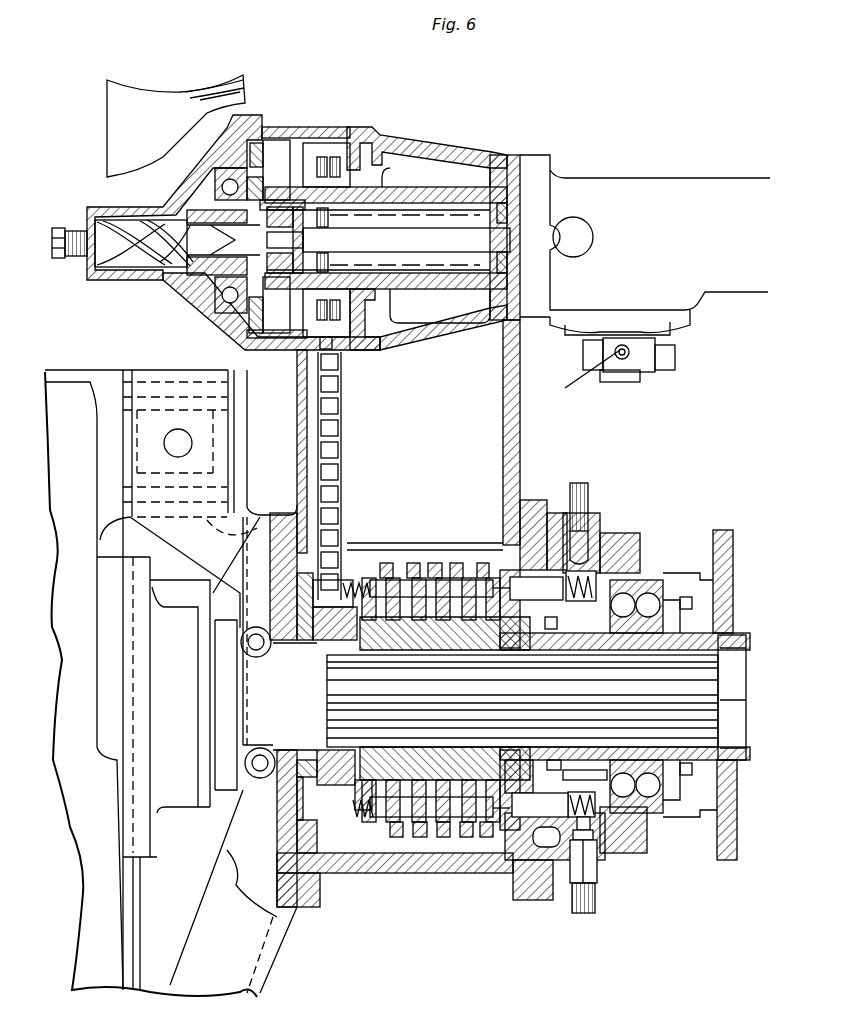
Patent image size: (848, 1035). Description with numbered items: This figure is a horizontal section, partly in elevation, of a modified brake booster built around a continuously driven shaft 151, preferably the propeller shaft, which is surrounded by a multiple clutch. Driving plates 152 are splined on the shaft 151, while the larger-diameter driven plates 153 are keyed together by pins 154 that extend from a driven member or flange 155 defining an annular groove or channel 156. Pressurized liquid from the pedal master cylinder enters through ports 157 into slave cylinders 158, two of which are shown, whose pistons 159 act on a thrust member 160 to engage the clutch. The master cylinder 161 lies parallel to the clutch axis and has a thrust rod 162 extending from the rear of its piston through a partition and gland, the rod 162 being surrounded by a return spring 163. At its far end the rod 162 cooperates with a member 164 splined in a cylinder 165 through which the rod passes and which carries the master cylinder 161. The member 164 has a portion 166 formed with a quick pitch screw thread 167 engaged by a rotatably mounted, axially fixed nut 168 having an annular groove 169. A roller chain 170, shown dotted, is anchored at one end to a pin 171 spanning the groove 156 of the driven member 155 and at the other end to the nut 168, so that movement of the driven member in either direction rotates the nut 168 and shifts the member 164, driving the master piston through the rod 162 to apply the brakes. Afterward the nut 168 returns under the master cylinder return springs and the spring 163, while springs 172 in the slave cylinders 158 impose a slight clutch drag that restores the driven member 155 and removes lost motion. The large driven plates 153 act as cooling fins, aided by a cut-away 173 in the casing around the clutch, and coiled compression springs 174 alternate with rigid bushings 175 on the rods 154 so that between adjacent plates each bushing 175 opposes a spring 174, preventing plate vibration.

The shaft 151 is at (297, 728).
The driving plates 152 is at (398, 838).
The driven plates 153 is at (433, 563).
The pins 154 is at (520, 493).
The driven member 155 is at (358, 803).
The annular groove 156 is at (343, 797).
The ports 157 is at (590, 510).
The slave cylinders 158 is at (617, 537).
The pistons 159 is at (540, 587).
The thrust member 160 is at (547, 810).
The master cylinder 161 is at (757, 270).
The thrust rod 162 is at (440, 233).
The return spring 163 is at (500, 153).
The member 164 is at (272, 237).
The cylinder 165 is at (400, 193).
The portion 166 is at (168, 250).
The quick pitch screw thread 167 is at (98, 273).
The nut 168 is at (253, 193).
The annular groove 169 is at (337, 140).
The roller chain 170 is at (342, 412).
The pin 171 is at (338, 583).
The springs 172 is at (643, 543).
The cut-away 173 is at (443, 543).
The coiled compression springs 174 is at (400, 577).
The bushings 175 is at (470, 563).